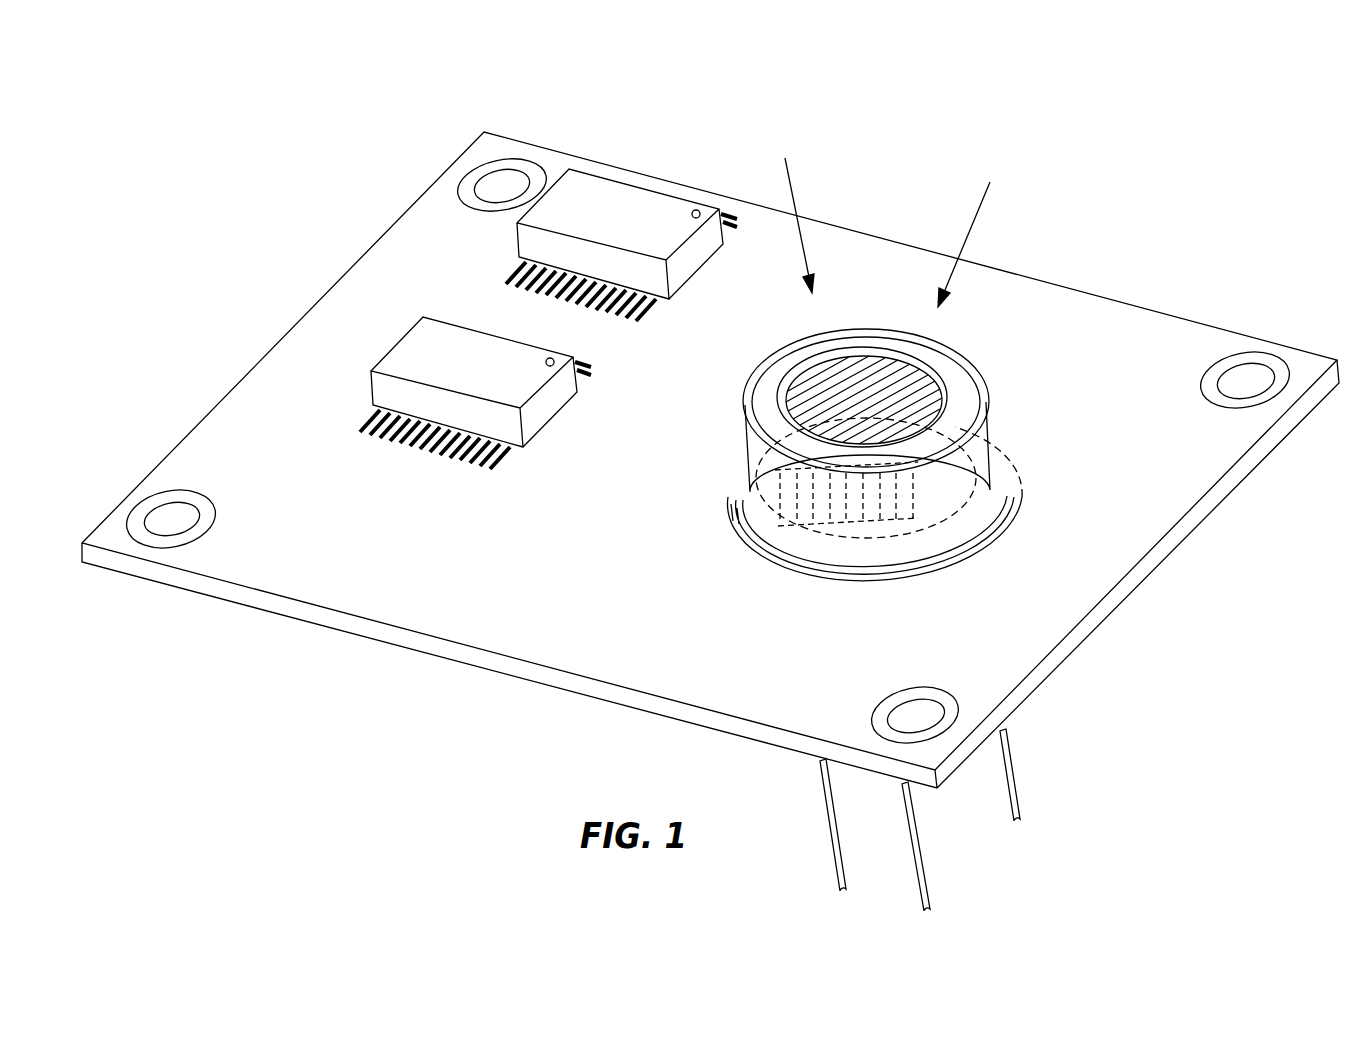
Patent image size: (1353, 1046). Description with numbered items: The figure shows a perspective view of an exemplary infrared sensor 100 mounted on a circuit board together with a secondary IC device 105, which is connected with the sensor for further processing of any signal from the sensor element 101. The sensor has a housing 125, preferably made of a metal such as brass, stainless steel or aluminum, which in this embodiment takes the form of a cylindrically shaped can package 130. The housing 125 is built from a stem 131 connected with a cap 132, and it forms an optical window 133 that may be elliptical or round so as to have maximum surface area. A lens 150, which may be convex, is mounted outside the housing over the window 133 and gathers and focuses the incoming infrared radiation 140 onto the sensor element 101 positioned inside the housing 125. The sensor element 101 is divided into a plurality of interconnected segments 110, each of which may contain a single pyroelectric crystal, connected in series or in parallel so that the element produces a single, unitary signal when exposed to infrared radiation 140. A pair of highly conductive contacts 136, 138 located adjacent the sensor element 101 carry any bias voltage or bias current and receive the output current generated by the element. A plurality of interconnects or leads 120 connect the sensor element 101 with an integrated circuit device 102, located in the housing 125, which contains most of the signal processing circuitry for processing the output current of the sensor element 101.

The infrared sensor 100 is at (982, 118).
The secondary IC device 105 is at (435, 598).
The housing 125 is at (730, 384).
The lens 150 is at (760, 407).
The optical window 133 is at (812, 368).
The sensor element 101 is at (832, 385).
The contact 136 is at (905, 357).
The segment 110 is at (870, 370).
The cap 132 is at (753, 452).
The can package 130 is at (1008, 402).
The integrated circuit (IC) device 102 is at (1005, 497).
The stem 131 is at (747, 547).
The contact 138 is at (727, 493).
The leads 120 is at (812, 523).
The infrared radiation 140 is at (794, 205).